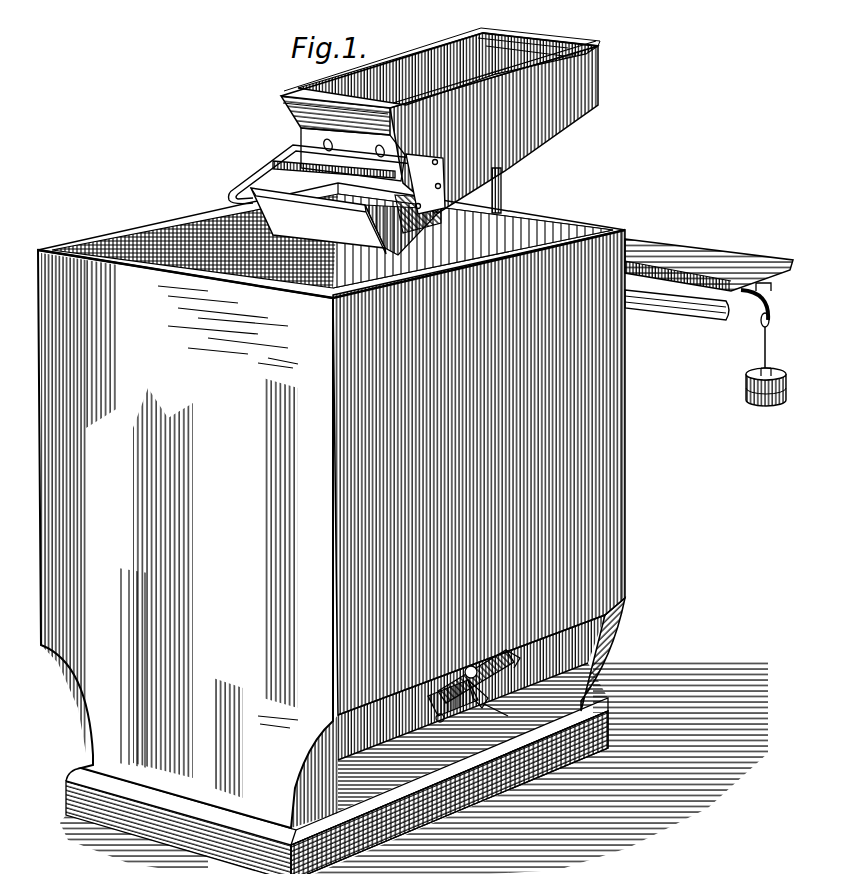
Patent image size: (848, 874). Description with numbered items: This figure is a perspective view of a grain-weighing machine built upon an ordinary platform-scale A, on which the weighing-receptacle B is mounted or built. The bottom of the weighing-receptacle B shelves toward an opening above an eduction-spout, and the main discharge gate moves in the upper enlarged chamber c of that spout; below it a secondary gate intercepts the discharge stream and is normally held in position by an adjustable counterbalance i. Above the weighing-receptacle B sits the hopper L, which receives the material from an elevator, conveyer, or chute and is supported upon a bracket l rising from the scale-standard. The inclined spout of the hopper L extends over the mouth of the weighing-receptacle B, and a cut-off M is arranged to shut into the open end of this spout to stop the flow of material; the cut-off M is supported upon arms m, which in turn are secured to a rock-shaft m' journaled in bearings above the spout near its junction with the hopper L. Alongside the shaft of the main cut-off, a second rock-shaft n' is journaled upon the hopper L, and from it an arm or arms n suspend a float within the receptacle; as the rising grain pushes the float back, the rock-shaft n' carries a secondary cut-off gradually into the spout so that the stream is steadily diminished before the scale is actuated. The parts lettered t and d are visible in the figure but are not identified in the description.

The weighing-receptacle B is at (331, 528).
The hopper L is at (440, 120).
The bracket l is at (501, 190).
The platform-scale A is at (709, 312).
The cut-off M is at (318, 221).
The arms m is at (237, 180).
The rock-shaft m' is at (323, 162).
The hinged flap t is at (353, 154).
The rock-shaft n' is at (334, 180).
The upper enlarged chamber c is at (441, 693).
The valve spout d is at (466, 688).
The arm or arms n is at (459, 659).
The counterbalance i is at (479, 669).